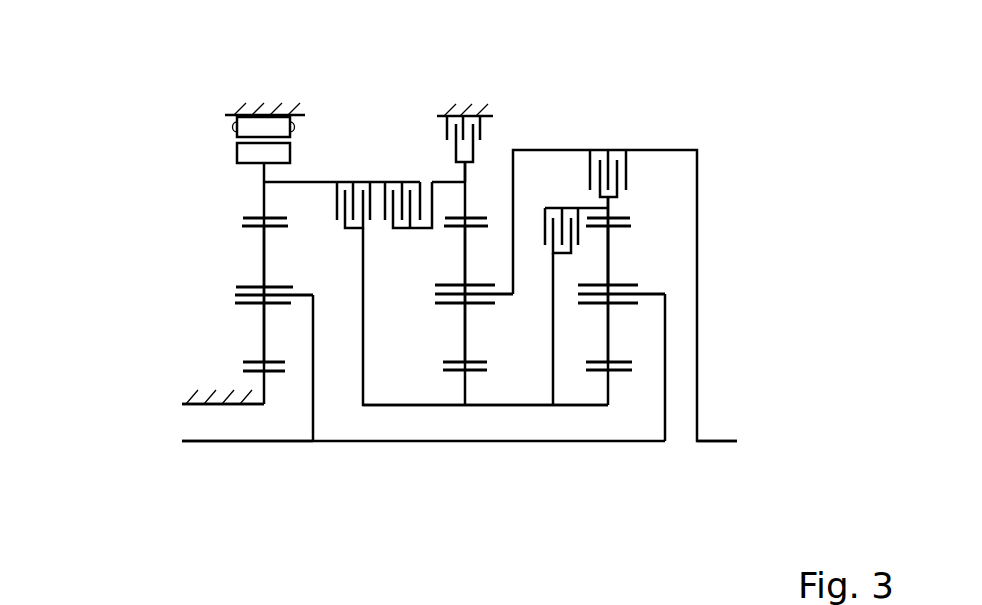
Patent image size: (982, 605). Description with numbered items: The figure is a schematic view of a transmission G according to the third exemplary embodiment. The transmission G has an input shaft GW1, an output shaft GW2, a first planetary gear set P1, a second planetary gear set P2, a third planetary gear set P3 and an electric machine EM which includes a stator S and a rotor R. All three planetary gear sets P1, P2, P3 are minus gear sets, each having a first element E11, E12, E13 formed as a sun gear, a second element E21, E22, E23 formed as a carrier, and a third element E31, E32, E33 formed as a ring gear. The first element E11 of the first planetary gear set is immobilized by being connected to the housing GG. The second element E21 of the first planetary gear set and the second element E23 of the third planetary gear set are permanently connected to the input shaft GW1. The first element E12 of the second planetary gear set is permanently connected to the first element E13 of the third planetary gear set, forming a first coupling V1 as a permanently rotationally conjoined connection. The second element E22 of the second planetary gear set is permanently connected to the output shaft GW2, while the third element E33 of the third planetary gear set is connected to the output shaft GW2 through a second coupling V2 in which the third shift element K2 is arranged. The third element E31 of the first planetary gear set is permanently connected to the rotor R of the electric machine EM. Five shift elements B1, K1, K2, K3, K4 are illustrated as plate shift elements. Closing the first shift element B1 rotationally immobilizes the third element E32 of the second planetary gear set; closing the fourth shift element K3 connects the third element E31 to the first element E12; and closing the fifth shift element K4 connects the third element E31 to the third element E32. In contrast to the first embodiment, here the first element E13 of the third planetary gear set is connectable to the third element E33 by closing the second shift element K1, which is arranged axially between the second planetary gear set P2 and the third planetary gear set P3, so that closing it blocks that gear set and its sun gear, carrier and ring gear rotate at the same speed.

The electric machine EM is at (174, 137).
The stator S is at (226, 128).
The rotor R is at (226, 152).
The second shift element K1 is at (556, 196).
The third shift element K2 is at (623, 146).
The fourth shift element K3 is at (345, 178).
The fifth shift element K4 is at (398, 178).
The first shift element B1 is at (441, 134).
The first element of the first planetary gear set E11 is at (279, 376).
The first element of the second planetary gear set E12 is at (447, 377).
The first element of the third planetary gear set E13 is at (620, 377).
The second element of the first planetary gear set E21 is at (303, 303).
The second element of the second planetary gear set E22 is at (503, 305).
The second element of the third planetary gear set E23 is at (657, 287).
The third element of the first planetary gear set E31 is at (250, 217).
The third element of the second planetary gear set E32 is at (481, 210).
The third element of the third planetary gear set E33 is at (630, 212).
The first coupling V1 is at (578, 408).
The second coupling V2 is at (603, 205).
The first planetary gear set P1 is at (264, 448).
The second planetary gear set P2 is at (465, 448).
The third planetary gear set P3 is at (608, 448).
The input shaft GW1 is at (222, 444).
The output shaft GW2 is at (715, 444).
The transmission G is at (726, 228).
The housing GG is at (215, 399).